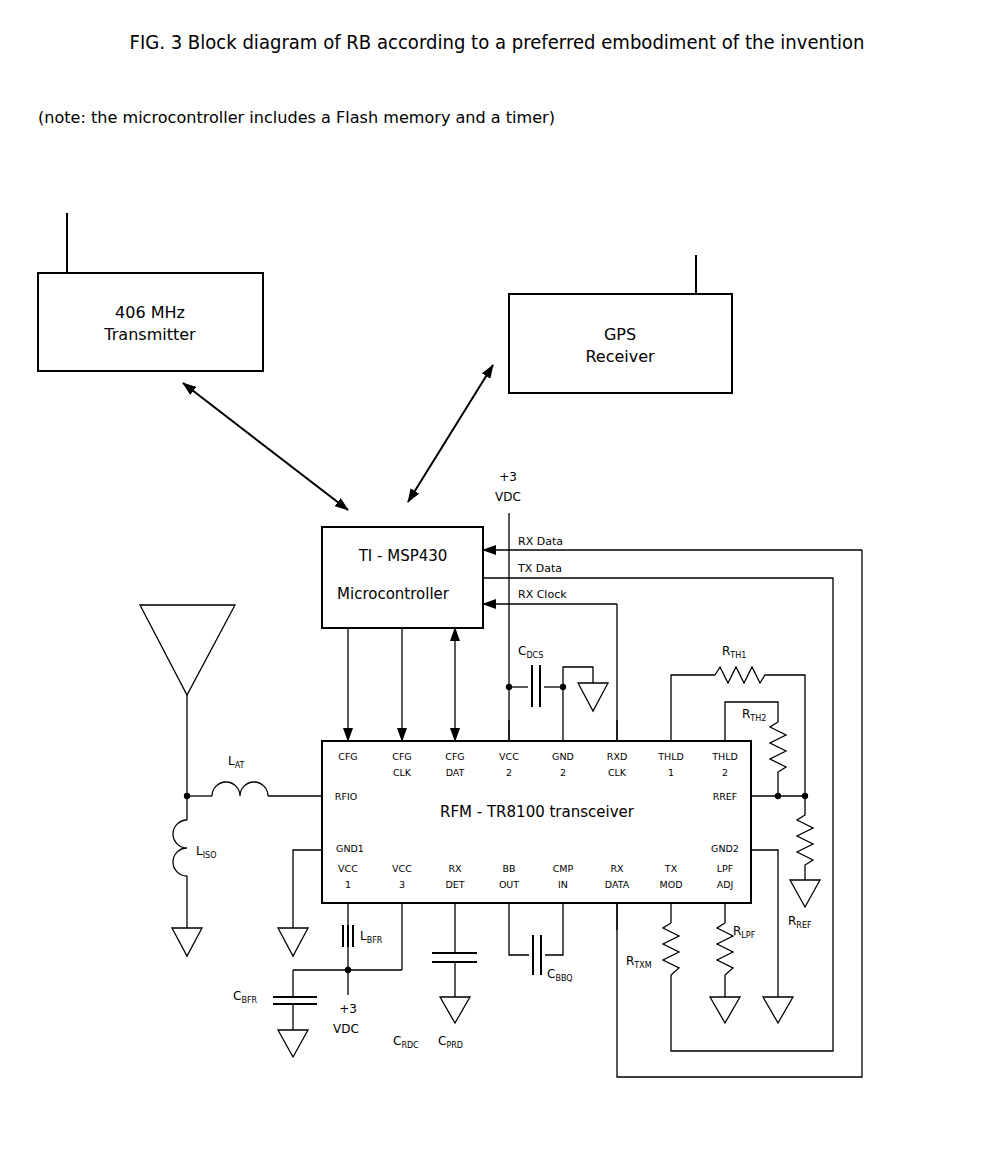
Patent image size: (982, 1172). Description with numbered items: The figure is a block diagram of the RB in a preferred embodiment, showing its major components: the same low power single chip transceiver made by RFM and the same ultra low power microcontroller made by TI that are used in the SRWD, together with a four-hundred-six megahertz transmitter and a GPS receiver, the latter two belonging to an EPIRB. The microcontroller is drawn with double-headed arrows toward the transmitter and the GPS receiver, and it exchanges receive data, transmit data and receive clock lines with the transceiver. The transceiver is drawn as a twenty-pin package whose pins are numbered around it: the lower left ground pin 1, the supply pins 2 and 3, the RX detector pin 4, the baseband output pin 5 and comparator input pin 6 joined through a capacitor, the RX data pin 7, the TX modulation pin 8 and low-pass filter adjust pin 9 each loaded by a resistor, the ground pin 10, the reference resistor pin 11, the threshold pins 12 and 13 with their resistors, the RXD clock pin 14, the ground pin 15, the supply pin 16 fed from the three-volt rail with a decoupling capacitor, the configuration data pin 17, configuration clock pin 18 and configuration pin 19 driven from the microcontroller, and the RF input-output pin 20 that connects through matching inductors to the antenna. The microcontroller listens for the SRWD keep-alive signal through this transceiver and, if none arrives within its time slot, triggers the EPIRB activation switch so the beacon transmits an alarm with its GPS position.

The transceiver pin 1 GND1/VCC1 1 is at (307, 889).
The transceiver pin 2 VCC1 2 is at (352, 936).
The transceiver pin 3 VCC3 3 is at (406, 936).
The transceiver pin 4 RX DET 4 is at (459, 928).
The transceiver pin 5 BB OUT 5 is at (519, 929).
The transceiver pin 6 CMP IN 6 is at (558, 929).
The transceiver pin 7 RX DATA 7 is at (621, 916).
The transceiver pin 8 TX MOD 8 is at (675, 913).
The transceiver pin 9 LPF ADJ 9 is at (729, 913).
The transceiver pin 10 GND2 10 is at (764, 923).
The transceiver pin 11 RREF 11 is at (778, 804).
The transceiver pin 12 THLD2 12 is at (751, 721).
The transceiver pin 13 THLD1 13 is at (693, 708).
The transceiver pin 14 RXD CLK 14 is at (625, 730).
The transceiver pin 15 GND2 15 is at (570, 714).
The transceiver pin 16 VCC2 16 is at (517, 730).
The transceiver pin 17 CFG DAT 17 is at (462, 684).
The transceiver pin 18 CFG CLK 18 is at (410, 684).
The transceiver pin 19 CFG 19 is at (356, 684).
The transceiver pin 20 RFIO 20 is at (295, 804).